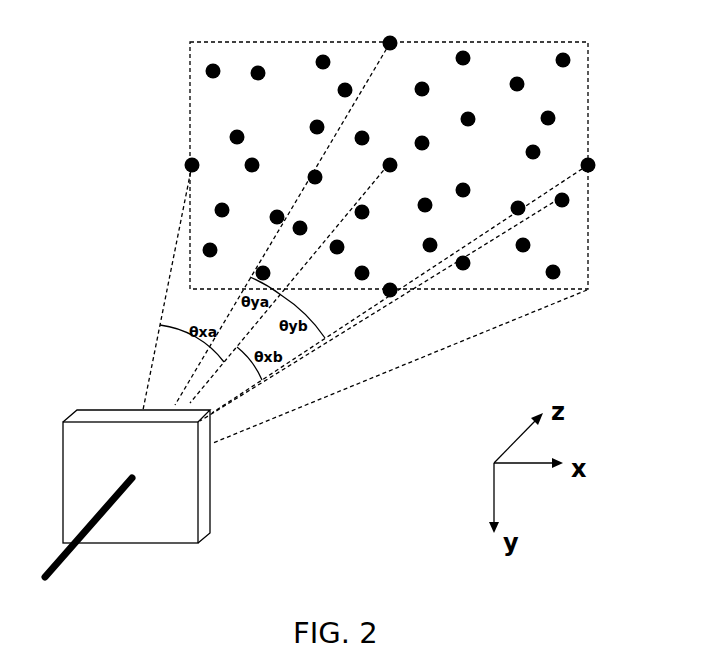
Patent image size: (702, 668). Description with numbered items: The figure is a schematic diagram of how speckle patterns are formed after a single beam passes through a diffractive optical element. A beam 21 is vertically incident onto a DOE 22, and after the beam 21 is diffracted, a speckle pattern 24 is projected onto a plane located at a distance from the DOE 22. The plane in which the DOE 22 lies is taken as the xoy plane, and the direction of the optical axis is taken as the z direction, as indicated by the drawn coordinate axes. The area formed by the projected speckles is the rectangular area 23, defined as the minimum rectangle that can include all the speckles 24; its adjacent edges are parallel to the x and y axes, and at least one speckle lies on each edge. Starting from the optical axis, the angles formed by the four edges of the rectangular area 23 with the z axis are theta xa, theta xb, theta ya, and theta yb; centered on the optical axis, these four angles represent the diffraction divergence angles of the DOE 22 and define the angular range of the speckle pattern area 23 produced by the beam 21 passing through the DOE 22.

The beam 21 is at (52, 572).
The DOE 22 is at (197, 512).
The rectangular area 23 is at (588, 103).
The speckle pattern 24 is at (566, 205).